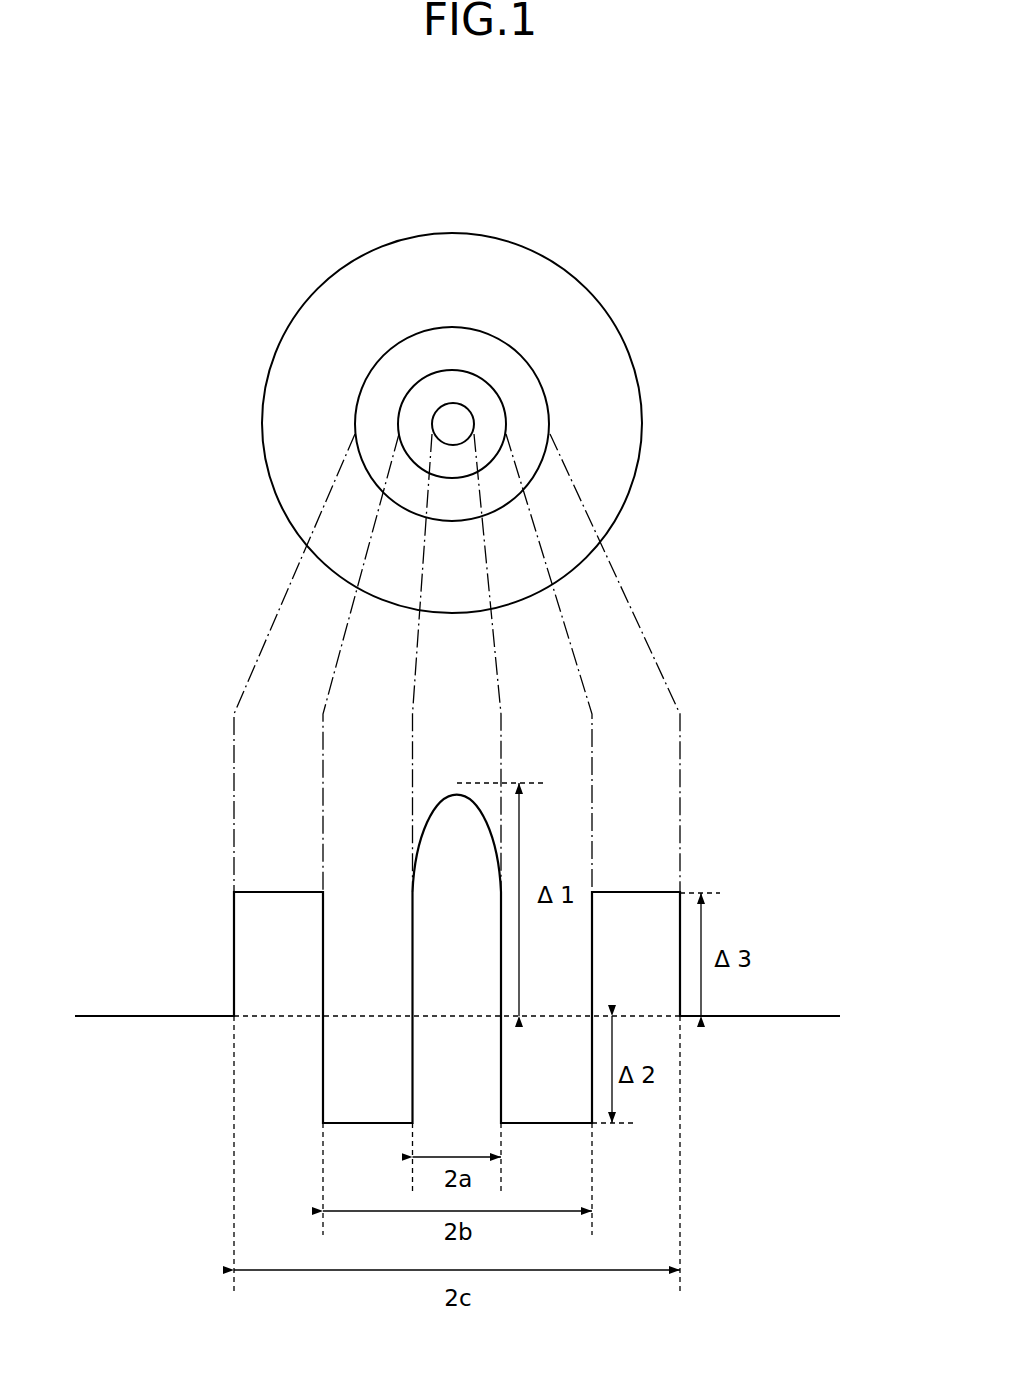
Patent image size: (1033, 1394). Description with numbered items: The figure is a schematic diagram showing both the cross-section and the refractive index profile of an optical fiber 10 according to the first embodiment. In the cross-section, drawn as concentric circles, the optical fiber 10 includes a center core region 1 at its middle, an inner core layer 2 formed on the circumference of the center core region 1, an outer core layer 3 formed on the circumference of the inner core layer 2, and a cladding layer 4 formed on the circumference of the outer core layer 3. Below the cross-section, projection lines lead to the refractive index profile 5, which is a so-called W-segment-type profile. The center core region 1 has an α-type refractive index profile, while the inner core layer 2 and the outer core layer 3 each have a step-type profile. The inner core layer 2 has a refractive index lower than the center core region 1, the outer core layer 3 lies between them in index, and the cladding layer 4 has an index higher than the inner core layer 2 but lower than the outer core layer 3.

The center core region 1 is at (452, 424).
The inner core layer 2 is at (470, 392).
The outer core layer 3 is at (505, 370).
The cladding layer 4 is at (549, 355).
The refractive index profile 5 is at (721, 727).
The optical fiber 10 is at (615, 131).